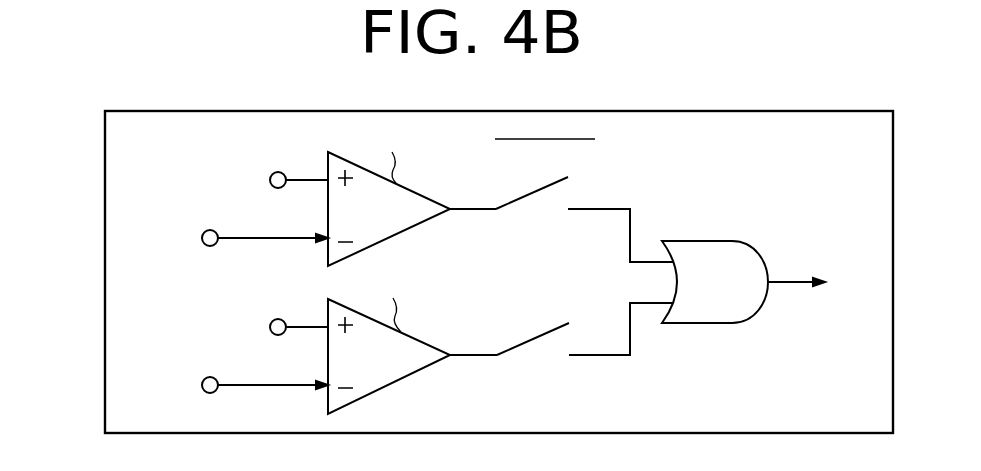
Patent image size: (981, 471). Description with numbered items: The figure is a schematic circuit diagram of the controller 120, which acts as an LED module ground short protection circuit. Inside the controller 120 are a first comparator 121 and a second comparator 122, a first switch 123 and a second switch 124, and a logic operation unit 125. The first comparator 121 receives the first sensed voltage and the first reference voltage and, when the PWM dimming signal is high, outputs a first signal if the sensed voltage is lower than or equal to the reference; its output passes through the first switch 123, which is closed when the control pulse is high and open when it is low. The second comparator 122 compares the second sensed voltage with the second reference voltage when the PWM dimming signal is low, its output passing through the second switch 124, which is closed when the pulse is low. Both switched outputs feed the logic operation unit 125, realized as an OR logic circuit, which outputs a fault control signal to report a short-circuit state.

The controller 120 is at (105, 272).
The first comparator 121 is at (390, 384).
The second comparator 122 is at (423, 222).
The first switch 123 is at (528, 341).
The second switch 124 is at (533, 193).
The logic operation unit 125 is at (700, 324).